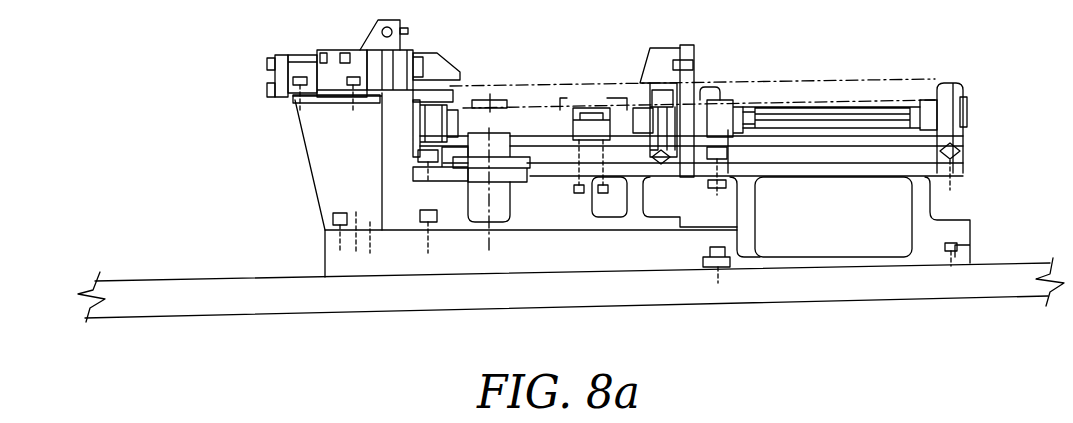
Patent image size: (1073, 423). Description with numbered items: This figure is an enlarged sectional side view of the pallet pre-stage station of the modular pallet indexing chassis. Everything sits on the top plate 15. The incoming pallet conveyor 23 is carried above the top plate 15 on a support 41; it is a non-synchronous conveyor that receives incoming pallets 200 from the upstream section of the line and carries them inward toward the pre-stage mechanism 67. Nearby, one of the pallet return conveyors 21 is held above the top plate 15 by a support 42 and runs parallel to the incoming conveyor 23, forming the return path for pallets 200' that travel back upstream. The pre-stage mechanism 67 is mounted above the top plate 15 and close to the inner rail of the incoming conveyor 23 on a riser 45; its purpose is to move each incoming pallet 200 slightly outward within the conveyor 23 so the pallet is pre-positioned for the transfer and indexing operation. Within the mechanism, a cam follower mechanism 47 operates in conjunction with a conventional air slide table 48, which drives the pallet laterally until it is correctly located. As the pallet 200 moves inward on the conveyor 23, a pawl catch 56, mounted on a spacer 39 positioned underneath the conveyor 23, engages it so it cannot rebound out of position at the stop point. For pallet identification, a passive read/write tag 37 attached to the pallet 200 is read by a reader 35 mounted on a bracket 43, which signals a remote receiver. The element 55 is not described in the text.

The top plate 15 is at (965, 283).
The pallet return conveyor 21 is at (974, 152).
The incoming pallet conveyor 23 is at (452, 259).
The reader 35 is at (511, 186).
The passive read/write tag 37 is at (497, 100).
The spacer 39 is at (591, 168).
The support 41 is at (633, 232).
The support 42 is at (745, 268).
The bracket 43 is at (456, 186).
The riser 45 is at (307, 155).
The cam follower mechanism 47 is at (435, 88).
The air slide table 48 is at (268, 77).
The support plate 55 is at (693, 45).
The pawl catch 56 is at (600, 107).
The pre-stage mechanism 67 is at (298, 220).
The pallet 200 is at (699, 58).
The pallet 200' is at (710, 99).